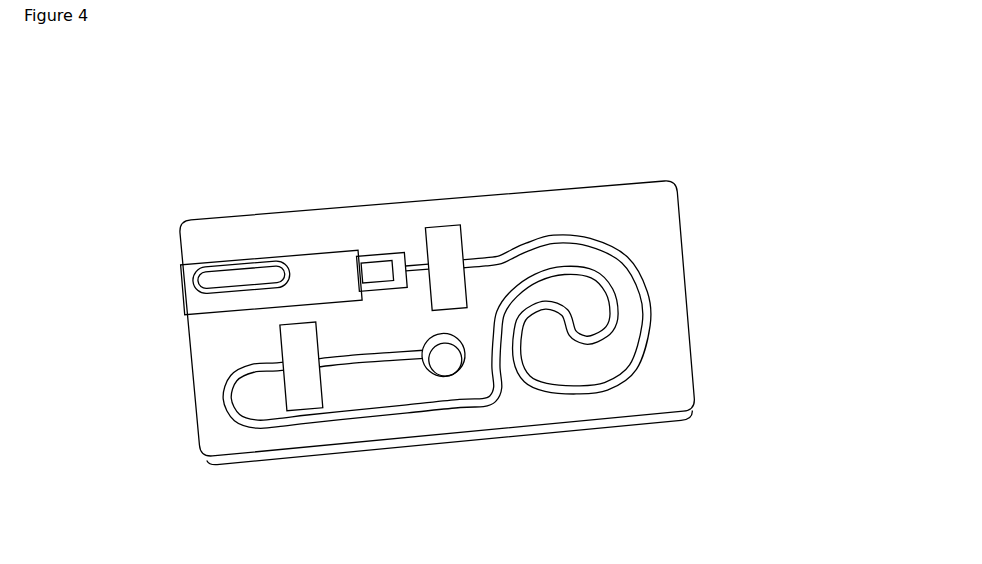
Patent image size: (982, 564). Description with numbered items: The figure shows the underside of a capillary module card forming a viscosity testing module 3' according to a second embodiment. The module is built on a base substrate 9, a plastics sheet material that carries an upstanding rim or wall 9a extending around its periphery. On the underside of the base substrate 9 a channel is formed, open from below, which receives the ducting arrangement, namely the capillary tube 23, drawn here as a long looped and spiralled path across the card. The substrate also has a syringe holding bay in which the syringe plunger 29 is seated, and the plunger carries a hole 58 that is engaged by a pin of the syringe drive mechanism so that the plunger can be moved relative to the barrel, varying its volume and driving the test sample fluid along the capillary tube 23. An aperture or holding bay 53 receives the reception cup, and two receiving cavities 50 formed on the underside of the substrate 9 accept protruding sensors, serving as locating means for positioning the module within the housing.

The viscosity testing module 3' is at (432, 297).
The base substrate 9 is at (648, 212).
The upstanding rim or wall 9a is at (541, 431).
The capillary tube 23 is at (626, 260).
The syringe plunger 29 is at (220, 293).
The receiving cavity 50 is at (450, 238).
The aperture or holding bay 53 is at (442, 364).
The hole 58 is at (273, 275).